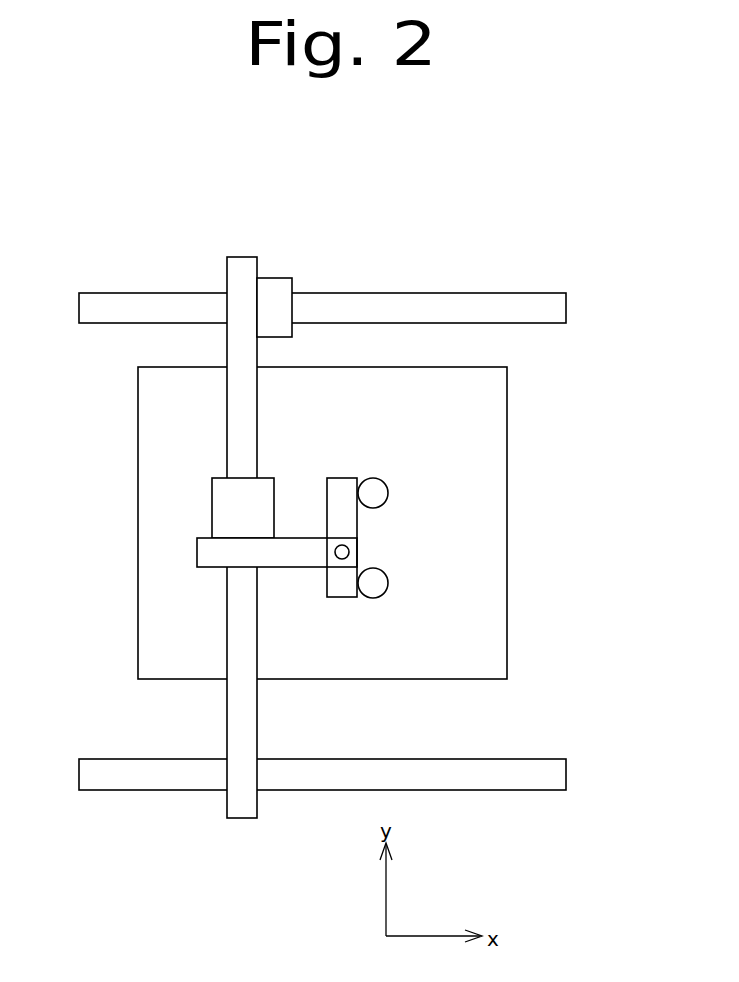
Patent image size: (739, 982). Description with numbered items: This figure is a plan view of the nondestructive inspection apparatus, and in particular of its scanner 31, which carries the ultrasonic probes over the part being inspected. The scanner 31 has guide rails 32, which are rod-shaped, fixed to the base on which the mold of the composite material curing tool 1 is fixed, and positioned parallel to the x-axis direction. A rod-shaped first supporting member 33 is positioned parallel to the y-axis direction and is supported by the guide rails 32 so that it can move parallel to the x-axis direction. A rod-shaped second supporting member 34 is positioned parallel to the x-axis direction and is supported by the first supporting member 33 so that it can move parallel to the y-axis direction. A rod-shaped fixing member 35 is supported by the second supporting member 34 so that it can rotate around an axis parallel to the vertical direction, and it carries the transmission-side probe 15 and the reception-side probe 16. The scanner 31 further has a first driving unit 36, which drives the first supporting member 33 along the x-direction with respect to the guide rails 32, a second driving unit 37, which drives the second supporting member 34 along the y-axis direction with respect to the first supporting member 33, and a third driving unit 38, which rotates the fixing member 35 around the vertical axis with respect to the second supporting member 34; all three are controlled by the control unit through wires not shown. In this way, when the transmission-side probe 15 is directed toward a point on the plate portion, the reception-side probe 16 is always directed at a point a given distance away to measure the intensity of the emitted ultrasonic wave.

The composite material curing tool 1 is at (105, 552).
The transmission-side probe 15 is at (388, 493).
The reception-side probe 16 is at (388, 583).
The scanner 31 is at (342, 501).
The guide rails 32 is at (522, 302).
The first supporting member 33 is at (227, 725).
The second supporting member 34 is at (292, 567).
The fixing member 35 is at (343, 478).
The first driving unit 36 is at (273, 278).
The second driving unit 37 is at (272, 478).
The third driving unit 38 is at (349, 552).